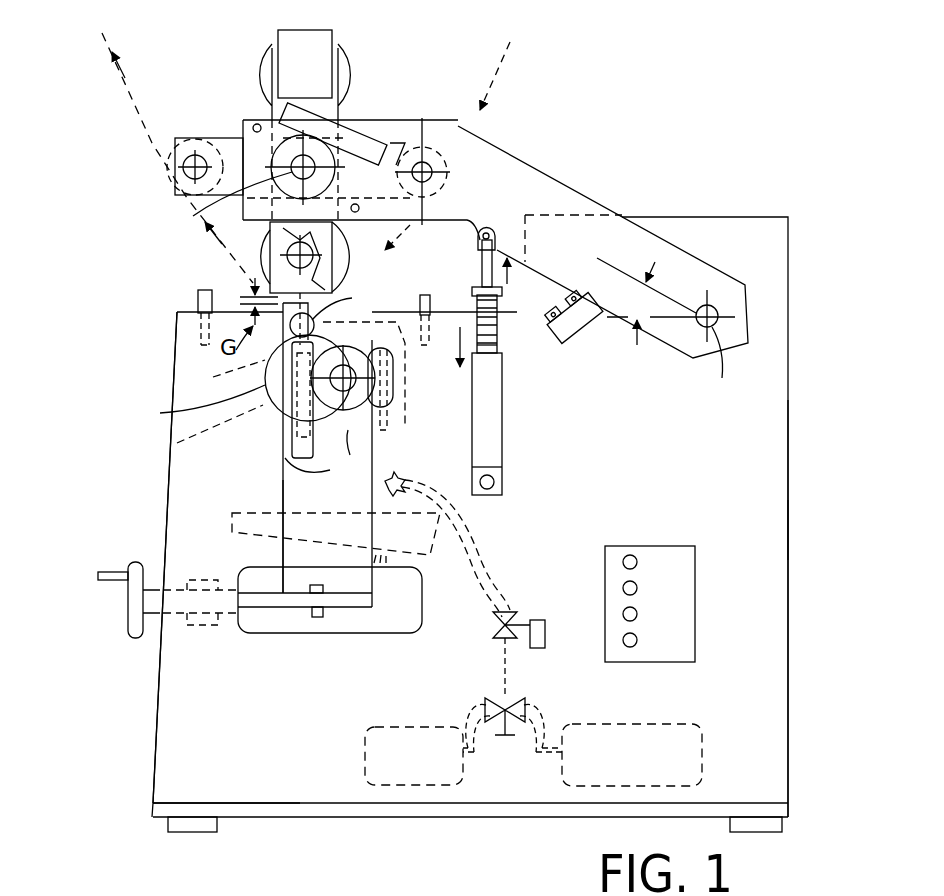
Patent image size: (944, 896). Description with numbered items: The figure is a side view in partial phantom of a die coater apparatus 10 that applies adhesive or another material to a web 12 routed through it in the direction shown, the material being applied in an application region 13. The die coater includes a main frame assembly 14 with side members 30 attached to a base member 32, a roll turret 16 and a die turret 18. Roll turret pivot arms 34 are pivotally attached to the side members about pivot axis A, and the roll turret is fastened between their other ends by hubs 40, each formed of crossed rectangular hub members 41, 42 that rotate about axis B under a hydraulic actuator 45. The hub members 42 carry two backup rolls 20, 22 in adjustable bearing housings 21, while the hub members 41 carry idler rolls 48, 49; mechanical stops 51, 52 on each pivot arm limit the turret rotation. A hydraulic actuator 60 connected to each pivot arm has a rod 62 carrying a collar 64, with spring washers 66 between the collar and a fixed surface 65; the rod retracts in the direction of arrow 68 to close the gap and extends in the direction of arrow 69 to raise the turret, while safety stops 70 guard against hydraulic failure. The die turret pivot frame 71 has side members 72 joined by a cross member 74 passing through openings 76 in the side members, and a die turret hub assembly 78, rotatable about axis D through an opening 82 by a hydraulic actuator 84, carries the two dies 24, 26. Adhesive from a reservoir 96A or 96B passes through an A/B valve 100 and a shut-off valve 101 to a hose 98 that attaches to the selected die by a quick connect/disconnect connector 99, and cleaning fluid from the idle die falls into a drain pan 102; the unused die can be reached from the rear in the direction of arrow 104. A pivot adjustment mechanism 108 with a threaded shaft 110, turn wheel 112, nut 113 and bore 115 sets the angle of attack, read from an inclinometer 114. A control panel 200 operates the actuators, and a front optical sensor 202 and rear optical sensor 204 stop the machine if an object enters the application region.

The die coater apparatus 10 is at (100, 485).
The web 12 is at (500, 82).
The application region 13 is at (236, 290).
The main frame assembly 14 is at (812, 678).
The roll turret 16 is at (183, 92).
The die turret 18 is at (168, 452).
The backup roll 20 is at (340, 72).
The adjustable bearing housing 21 is at (305, 40).
The backup roll 22 is at (355, 262).
The die 24 is at (224, 375).
The die 26 is at (416, 395).
The side member 30 is at (470, 516).
The base member 32 is at (275, 810).
The roll turret pivot arm 34 is at (547, 200).
The hub 40 is at (210, 128).
The hub member 41 is at (226, 137).
The hub member 42 is at (350, 74).
The hydraulic actuator 45 is at (350, 126).
The idler roll 48 is at (170, 155).
The idler roll 49 is at (448, 153).
The mechanical stop 51 is at (256, 122).
The mechanical stop 52 is at (368, 198).
The hydraulic actuator 60 is at (502, 445).
The rod 62 is at (478, 270).
The collar 64 is at (500, 293).
The fixed surface 65 is at (498, 342).
The spring washers 66 is at (497, 322).
The arrow 68 is at (458, 327).
The arrow 69 is at (510, 280).
The safety stop 70 is at (568, 336).
The die turret pivot frame 71 is at (275, 488).
The side member 72 is at (283, 507).
The cross member 74 is at (345, 605).
The opening 76 is at (400, 636).
The die turret hub assembly 78 is at (292, 455).
The opening 82 is at (199, 404).
The hydraulic actuator 84 is at (273, 410).
The reservoir 96A is at (365, 758).
The reservoir 96B is at (702, 752).
The hose 98 is at (478, 554).
The quick connect/disconnect connector 99 is at (395, 478).
The A/B valve 100 is at (522, 704).
The shut-off valve 101 is at (512, 612).
The drain pan 102 is at (232, 520).
The arrow 104 is at (877, 517).
The pivot adjustment mechanism 108 is at (176, 644).
The threaded shaft 110 is at (230, 626).
The turn wheel 112 is at (132, 598).
The nut 113 is at (315, 620).
The inclinometer 114 is at (388, 562).
The bore 115 is at (200, 630).
The control panel 200 is at (695, 604).
The front optical sensor 202 is at (198, 300).
The rear optical sensor 204 is at (428, 350).